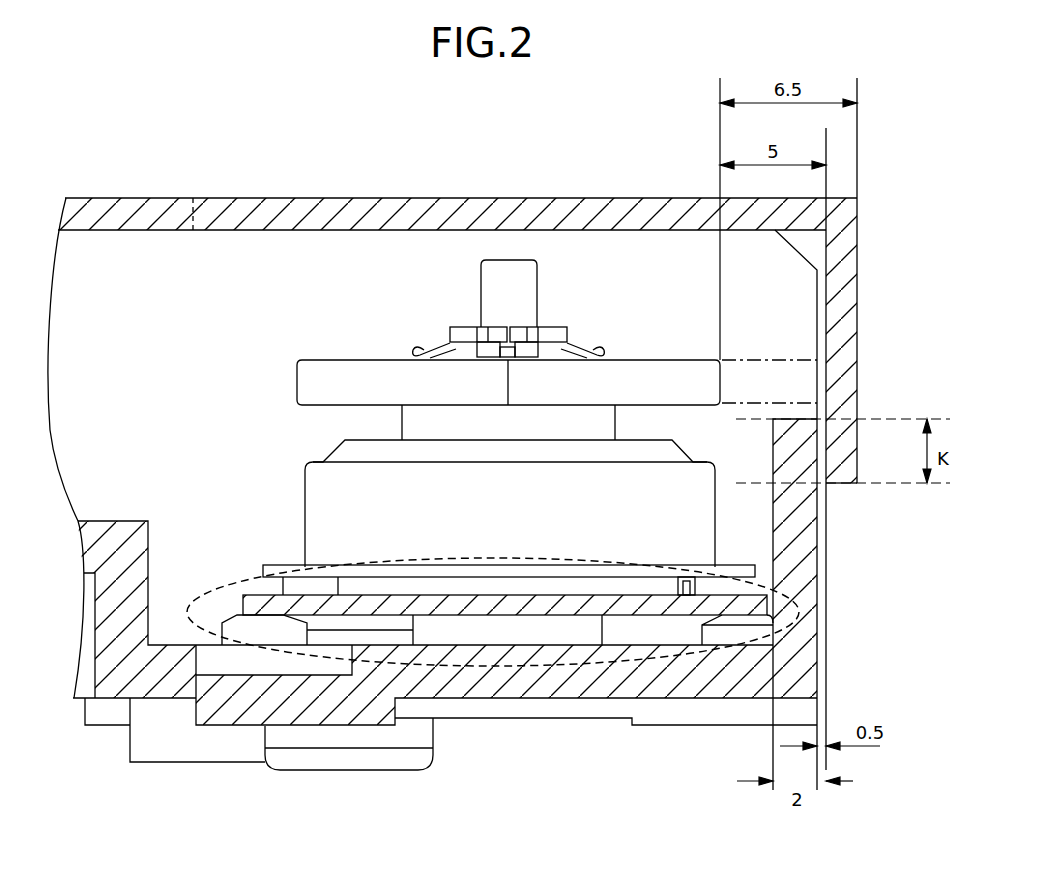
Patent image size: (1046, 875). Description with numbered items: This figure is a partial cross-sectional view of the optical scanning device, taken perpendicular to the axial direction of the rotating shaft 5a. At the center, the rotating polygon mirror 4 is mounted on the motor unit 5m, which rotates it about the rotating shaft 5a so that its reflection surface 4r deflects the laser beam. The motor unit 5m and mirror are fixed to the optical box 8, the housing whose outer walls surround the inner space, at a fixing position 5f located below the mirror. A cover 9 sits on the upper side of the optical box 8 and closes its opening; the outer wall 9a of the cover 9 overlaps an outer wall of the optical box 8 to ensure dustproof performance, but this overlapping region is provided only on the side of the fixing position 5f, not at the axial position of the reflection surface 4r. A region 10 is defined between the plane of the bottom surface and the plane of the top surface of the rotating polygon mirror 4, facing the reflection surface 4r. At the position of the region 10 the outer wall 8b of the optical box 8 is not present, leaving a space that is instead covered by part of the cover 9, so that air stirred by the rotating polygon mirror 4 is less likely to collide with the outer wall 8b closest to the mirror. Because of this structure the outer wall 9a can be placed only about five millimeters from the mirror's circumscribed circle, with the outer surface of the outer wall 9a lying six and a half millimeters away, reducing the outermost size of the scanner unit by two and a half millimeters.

The rotating polygon mirror 4 is at (382, 382).
The reflection surface 4r is at (332, 383).
The rotating shaft 5a is at (507, 290).
The motor unit 5m is at (383, 530).
The fixing position 5f is at (510, 667).
The optical box 8 is at (687, 683).
The outer wall 8b is at (803, 572).
The cover 9 is at (300, 210).
The outer wall 9a is at (847, 455).
The region 10 is at (775, 383).